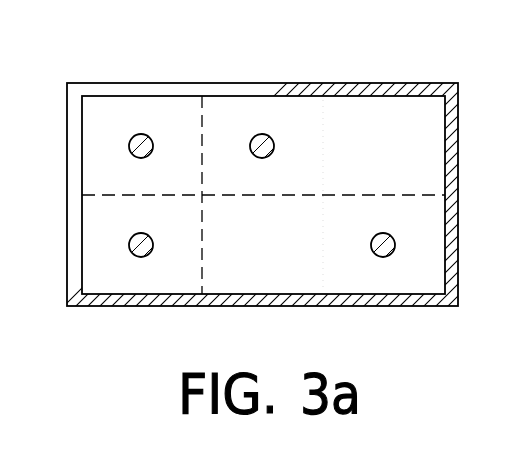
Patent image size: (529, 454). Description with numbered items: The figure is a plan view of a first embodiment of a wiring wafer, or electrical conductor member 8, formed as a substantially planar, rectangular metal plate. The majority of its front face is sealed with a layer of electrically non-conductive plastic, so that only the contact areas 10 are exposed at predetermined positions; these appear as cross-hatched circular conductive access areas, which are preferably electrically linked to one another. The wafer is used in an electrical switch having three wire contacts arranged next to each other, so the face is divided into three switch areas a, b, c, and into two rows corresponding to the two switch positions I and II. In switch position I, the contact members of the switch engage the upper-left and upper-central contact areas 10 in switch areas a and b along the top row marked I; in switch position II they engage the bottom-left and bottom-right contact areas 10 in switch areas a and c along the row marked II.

The electrical conductor member 8 is at (265, 83).
The contact areas 10 is at (139, 134).
The switch area a is at (142, 218).
The switch area b is at (262, 218).
The switch area c is at (384, 218).
The switch position I is at (235, 145).
The switch position II is at (231, 244).